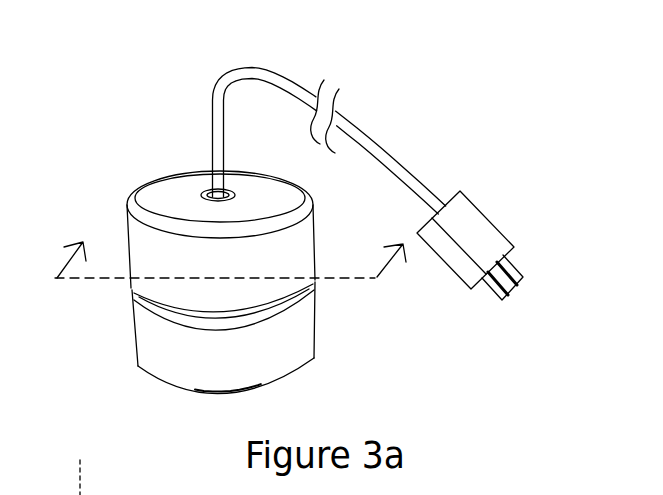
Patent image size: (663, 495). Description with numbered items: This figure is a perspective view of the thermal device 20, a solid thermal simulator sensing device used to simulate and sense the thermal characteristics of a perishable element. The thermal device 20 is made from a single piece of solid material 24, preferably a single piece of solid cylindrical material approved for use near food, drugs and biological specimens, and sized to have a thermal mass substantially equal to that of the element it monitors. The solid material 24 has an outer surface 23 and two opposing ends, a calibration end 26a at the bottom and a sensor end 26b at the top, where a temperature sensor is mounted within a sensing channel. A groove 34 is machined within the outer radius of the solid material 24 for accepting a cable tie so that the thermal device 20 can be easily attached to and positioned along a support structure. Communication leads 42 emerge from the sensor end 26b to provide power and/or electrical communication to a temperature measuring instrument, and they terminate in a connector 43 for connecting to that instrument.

The thermal device 20 is at (163, 96).
The communication leads 42 is at (284, 75).
The connector 43 is at (472, 227).
The sensor end 26b is at (182, 192).
The single piece of solid material 24 is at (221, 241).
The groove 34 is at (322, 282).
The outer surface 23 is at (315, 357).
The calibration end 26a is at (215, 393).